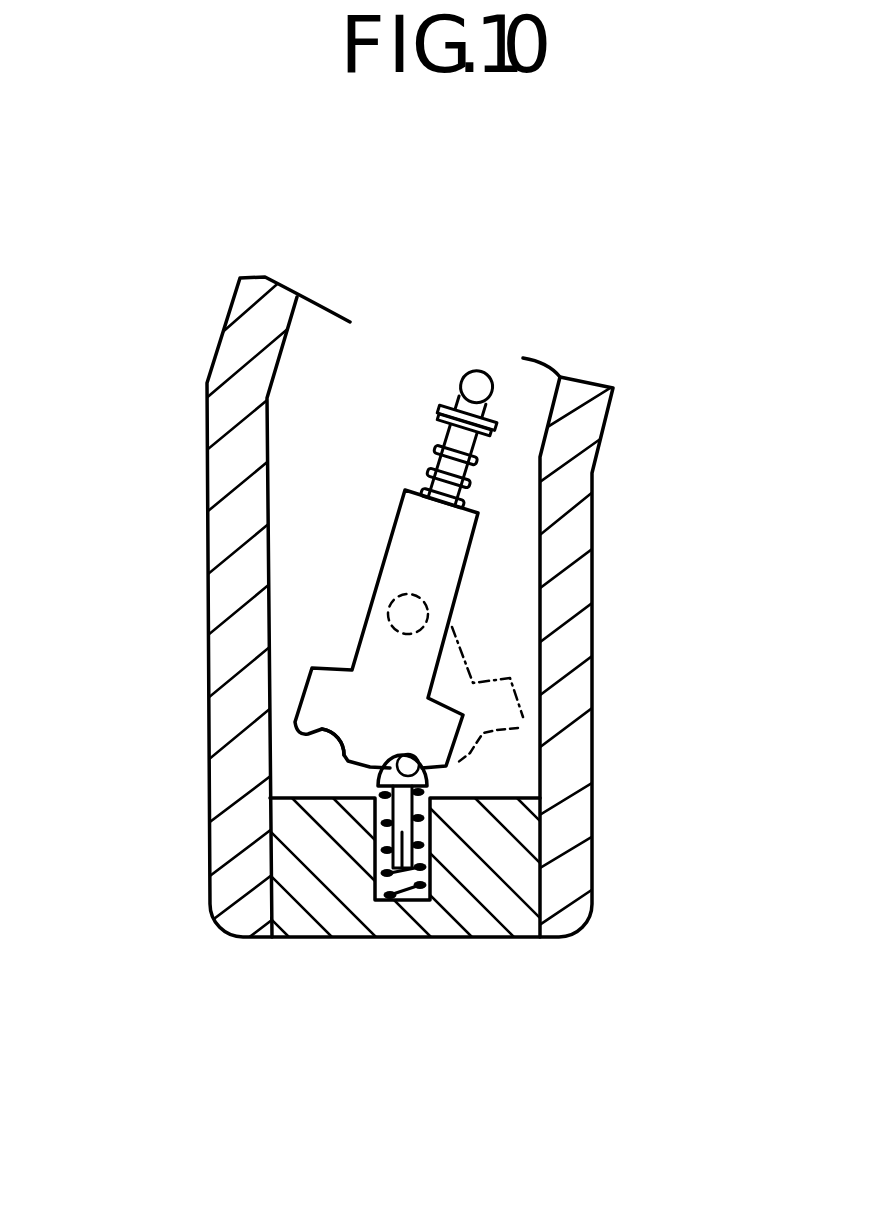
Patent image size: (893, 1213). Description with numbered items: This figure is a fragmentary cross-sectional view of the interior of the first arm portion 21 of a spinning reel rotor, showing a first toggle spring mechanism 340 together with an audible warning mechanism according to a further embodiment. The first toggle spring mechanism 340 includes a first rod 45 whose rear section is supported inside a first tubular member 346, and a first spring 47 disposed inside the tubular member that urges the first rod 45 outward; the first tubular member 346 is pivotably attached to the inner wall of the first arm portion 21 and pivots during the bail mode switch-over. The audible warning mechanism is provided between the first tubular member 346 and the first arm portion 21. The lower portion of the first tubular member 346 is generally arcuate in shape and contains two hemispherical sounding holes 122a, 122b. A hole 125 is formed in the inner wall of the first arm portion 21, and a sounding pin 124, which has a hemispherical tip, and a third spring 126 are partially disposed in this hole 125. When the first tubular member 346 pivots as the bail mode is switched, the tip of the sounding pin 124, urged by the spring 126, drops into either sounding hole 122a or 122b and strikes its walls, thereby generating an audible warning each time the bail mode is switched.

The first arm portion 21 is at (593, 588).
The first rod 45 is at (480, 370).
The first spring 47 is at (438, 425).
The first toggle spring mechanism 340 is at (347, 543).
The first tubular member 346 is at (450, 540).
The sounding hole 122a is at (320, 733).
The sounding hole 122b is at (420, 763).
The sounding pin 124 is at (430, 833).
The hole 125 is at (410, 905).
The third spring 126 is at (405, 830).